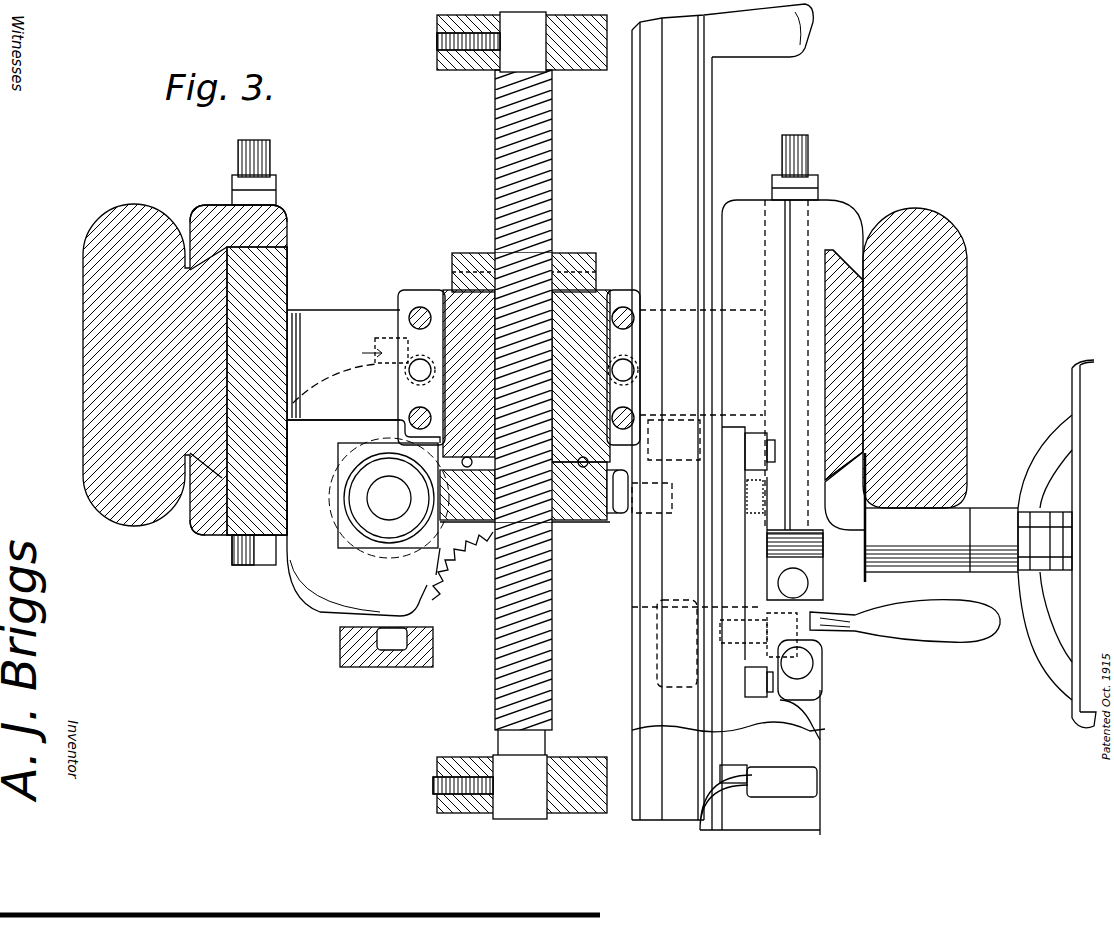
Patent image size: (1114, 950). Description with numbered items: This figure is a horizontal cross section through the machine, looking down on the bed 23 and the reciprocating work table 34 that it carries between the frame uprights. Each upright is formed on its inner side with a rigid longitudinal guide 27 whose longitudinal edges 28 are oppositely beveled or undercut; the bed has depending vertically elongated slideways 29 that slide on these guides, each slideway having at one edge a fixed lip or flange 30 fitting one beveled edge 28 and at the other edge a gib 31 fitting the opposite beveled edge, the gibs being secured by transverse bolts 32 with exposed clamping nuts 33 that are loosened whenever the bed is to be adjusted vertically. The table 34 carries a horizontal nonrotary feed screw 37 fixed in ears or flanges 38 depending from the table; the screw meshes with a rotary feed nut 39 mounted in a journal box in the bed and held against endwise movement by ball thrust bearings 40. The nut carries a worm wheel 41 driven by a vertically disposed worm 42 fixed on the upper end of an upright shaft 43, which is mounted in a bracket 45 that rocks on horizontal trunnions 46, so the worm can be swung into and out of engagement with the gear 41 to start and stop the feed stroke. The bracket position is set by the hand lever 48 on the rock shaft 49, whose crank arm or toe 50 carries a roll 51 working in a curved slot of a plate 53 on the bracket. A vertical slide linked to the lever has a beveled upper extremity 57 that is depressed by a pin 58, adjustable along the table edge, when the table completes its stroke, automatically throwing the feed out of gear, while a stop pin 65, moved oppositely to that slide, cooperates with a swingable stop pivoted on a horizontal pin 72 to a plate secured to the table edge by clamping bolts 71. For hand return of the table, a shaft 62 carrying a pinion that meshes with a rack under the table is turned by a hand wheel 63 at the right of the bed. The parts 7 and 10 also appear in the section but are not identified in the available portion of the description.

The wheel 7 is at (86, 347).
The plate 10 is at (761, 517).
The shaft bearing 23 is at (340, 323).
The longitudinal guides 27 is at (524, 391).
The longitudinal edges 28 is at (529, 363).
The slideways 29 is at (290, 307).
The lip or flange 30 is at (196, 518).
The gib 31 is at (212, 217).
The transverse bolts 32 is at (262, 558).
The clamping nuts 33 is at (272, 177).
The work table 34 is at (690, 143).
The feed screw 37 is at (545, 206).
The ears or flanges 38 is at (597, 73).
The feed nut 39 is at (485, 330).
The end thrust bearings 40 is at (470, 262).
The driving gear or worm wheel 41 is at (612, 522).
The worm 42 is at (376, 549).
The upright shaft 43 is at (389, 498).
The bracket 45 is at (330, 583).
The trunnions 46 is at (325, 683).
The hand lever 48 is at (952, 637).
The rock shaft 49 is at (658, 634).
The crank arm or toe 50 is at (624, 535).
The stud or roll 51 is at (630, 497).
The flange or plate 53 is at (640, 512).
The upper extremity 57 is at (810, 661).
The pin or stud 58 is at (815, 783).
The shaft 62 is at (985, 516).
The hand wheel 63 is at (1072, 425).
The stop pin 65 is at (810, 585).
The clamping bolts 71 is at (750, 452).
The horizontal pin 72 is at (738, 504).